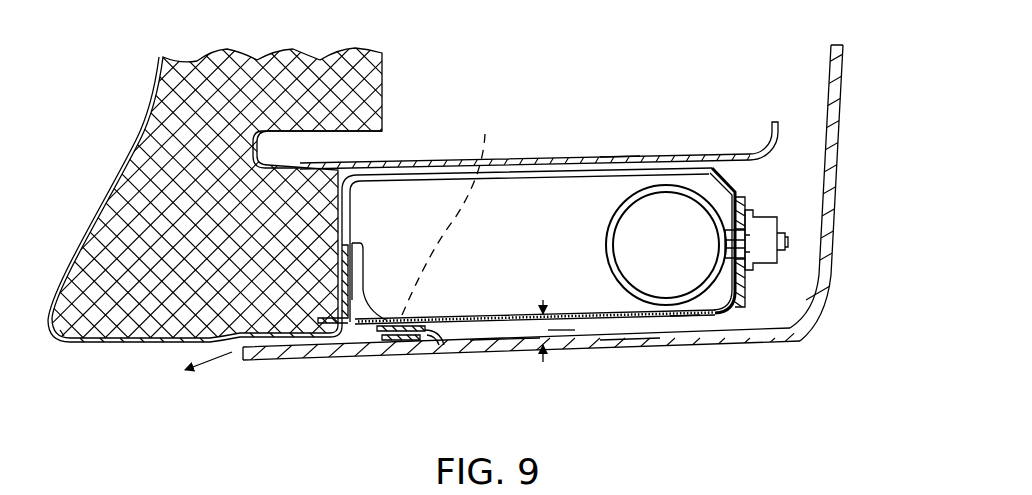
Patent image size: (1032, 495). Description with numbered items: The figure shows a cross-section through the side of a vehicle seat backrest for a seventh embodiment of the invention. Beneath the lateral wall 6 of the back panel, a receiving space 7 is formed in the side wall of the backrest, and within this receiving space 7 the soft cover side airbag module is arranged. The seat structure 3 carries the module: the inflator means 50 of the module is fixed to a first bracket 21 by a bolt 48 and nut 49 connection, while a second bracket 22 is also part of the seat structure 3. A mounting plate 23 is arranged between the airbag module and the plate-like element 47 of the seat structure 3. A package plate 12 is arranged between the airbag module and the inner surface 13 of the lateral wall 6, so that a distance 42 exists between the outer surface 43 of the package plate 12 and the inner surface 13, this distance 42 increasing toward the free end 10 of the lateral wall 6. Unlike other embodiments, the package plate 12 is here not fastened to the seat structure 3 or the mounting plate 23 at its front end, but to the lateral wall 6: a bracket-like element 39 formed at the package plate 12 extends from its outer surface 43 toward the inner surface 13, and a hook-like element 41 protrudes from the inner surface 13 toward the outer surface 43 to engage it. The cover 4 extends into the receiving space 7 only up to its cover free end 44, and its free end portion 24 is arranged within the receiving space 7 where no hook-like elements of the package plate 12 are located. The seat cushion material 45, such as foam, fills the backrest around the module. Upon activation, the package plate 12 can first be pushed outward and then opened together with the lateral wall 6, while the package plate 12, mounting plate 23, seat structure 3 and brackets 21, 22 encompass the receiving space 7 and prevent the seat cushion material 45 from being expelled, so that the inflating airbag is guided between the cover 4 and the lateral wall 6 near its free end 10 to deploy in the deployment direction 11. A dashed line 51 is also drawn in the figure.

The seat structure 3 is at (538, 142).
The cover 4 is at (120, 344).
The lateral wall 6 is at (622, 356).
The receiving space 7 is at (772, 297).
The free end 10 is at (238, 356).
The deployment direction 11 is at (206, 358).
The package plate 12 is at (688, 322).
The inner surface 13 is at (514, 333).
The first bracket 21 is at (733, 216).
The second bracket 22 is at (322, 324).
The mounting plate 23 is at (611, 158).
The free end portion 24 is at (353, 316).
The bracket-like element 39 is at (418, 342).
The hook-like element 41 is at (442, 350).
The distance 42 is at (540, 355).
The outer surface 43 is at (560, 328).
The cover free end 44 is at (354, 245).
The seat cushion material 45 is at (237, 82).
The plate-like element 47 is at (565, 160).
The bolt 48 is at (790, 242).
The nut 49 is at (765, 262).
The inflator means 50 is at (658, 186).
The tear line 51 is at (453, 211).